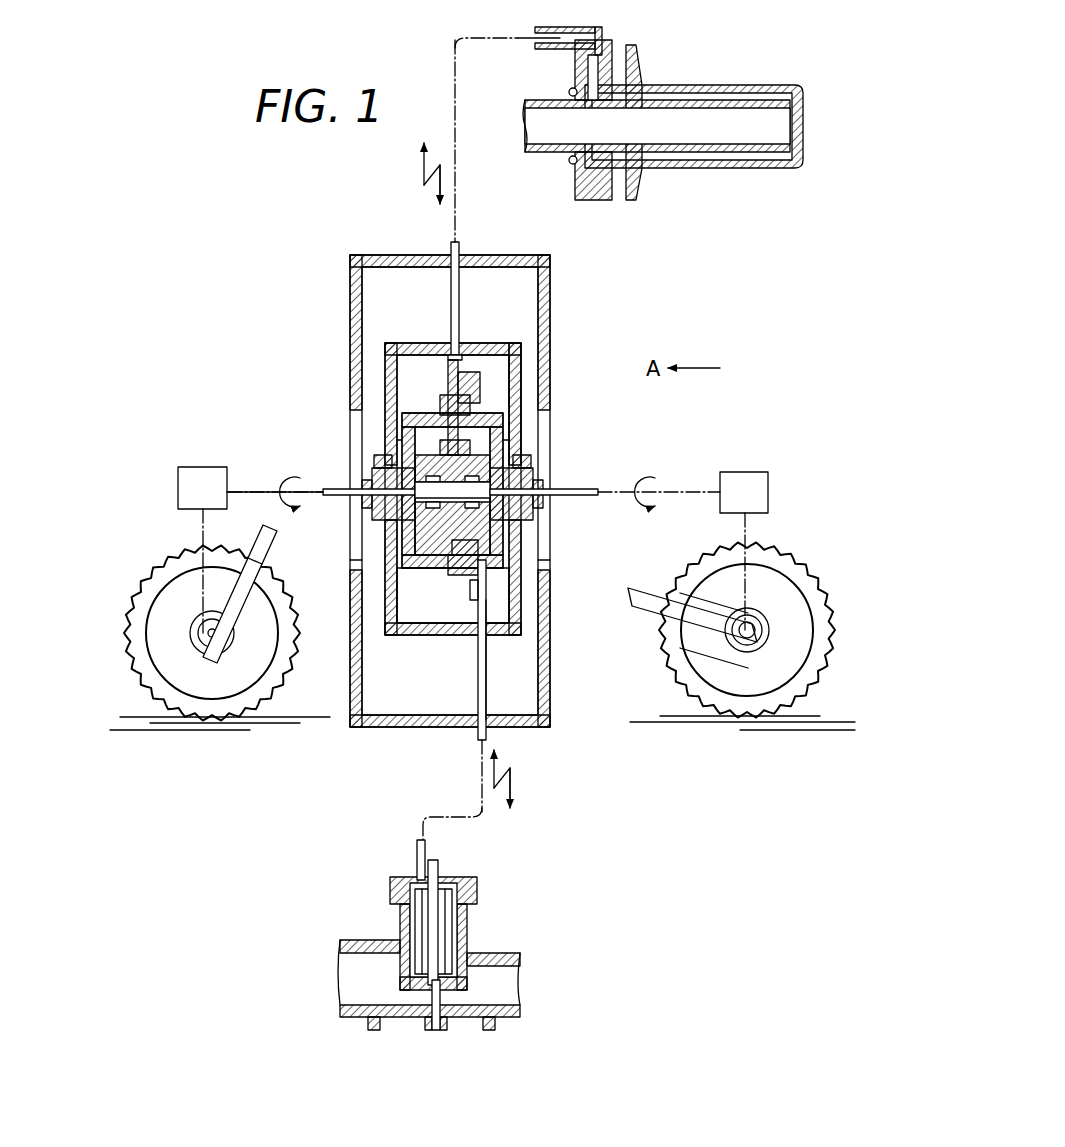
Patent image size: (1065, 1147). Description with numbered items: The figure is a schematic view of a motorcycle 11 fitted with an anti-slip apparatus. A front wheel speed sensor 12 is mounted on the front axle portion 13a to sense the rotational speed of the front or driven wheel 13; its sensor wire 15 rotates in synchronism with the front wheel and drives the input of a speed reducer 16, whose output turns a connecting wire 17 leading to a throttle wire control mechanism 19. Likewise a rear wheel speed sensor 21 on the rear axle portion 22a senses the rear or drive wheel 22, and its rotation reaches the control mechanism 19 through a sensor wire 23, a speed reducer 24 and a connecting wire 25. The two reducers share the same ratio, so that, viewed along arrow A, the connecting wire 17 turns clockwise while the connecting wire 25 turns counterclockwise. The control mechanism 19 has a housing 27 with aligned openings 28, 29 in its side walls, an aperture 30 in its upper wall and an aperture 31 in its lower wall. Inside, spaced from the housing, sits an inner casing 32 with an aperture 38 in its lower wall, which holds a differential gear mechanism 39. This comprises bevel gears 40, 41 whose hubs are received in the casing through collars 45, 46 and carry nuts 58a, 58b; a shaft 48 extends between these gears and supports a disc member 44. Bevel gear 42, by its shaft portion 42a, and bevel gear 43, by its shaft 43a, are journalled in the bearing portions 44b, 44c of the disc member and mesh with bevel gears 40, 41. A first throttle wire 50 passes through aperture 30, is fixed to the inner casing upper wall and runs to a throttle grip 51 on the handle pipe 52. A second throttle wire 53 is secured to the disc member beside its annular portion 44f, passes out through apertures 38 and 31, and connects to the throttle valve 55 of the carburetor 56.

The motorcycle 11 is at (644, 618).
The front wheel speed sensor 12 is at (200, 634).
The front wheel 13 is at (280, 680).
The front axle portion 13a is at (212, 640).
The sensor wire 15 is at (203, 545).
The speed reducer 16 is at (202, 467).
The connecting wire 17 is at (272, 490).
The throttle wire control mechanism 19 is at (350, 298).
The rear wheel speed sensor 21 is at (752, 628).
The rear wheel 22 is at (680, 668).
The rear axle portion 22a is at (742, 645).
The sensor wire 23 is at (745, 528).
The speed reducer 24 is at (746, 480).
The connecting wire 25 is at (694, 490).
The housing 27 is at (521, 356).
The opening 28 is at (350, 572).
The opening 29 is at (550, 566).
The aperture 30 is at (451, 252).
The aperture 31 is at (486, 700).
The inner casing 32 is at (509, 355).
The aperture 38 is at (476, 640).
The differential gear mechanism 39 is at (410, 630).
The bevel gear 40 is at (380, 510).
The bevel gear 41 is at (533, 480).
The bevel gear 42 is at (410, 427).
The shaft portion 42a is at (440, 445).
The bevel gear 43 is at (425, 560).
The shaft 43a is at (462, 555).
The disc member 44 is at (462, 372).
The bearing portion 44b is at (448, 395).
The bearing portion 44c is at (455, 576).
The annular portion 44f is at (521, 380).
The collar 45 is at (397, 440).
The collar 46 is at (509, 440).
The shaft 48 is at (490, 495).
The first throttle wire 50 is at (459, 246).
The throttle grip 51 is at (700, 85).
The handle pipe 52 is at (540, 100).
The second throttle wire 53 is at (486, 675).
The throttle valve 55 is at (410, 986).
The carburetor 56 is at (500, 950).
The nut 58a is at (376, 458).
The nut 58b is at (531, 458).